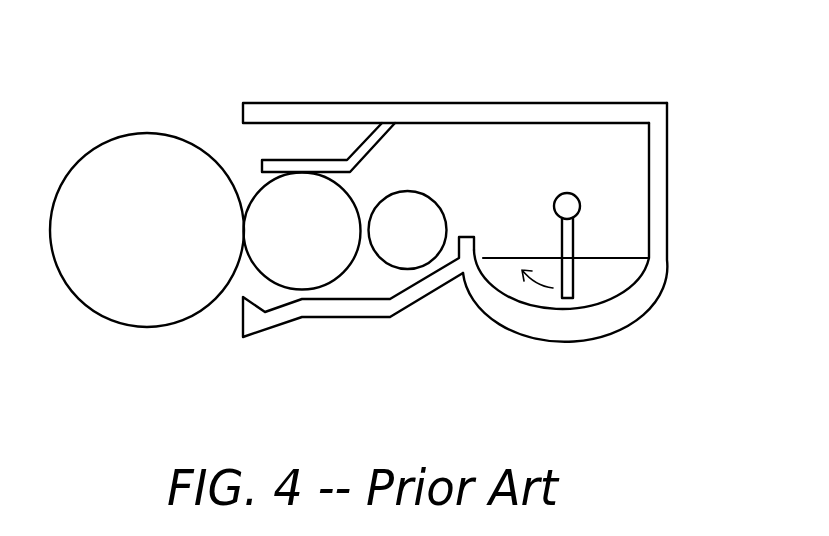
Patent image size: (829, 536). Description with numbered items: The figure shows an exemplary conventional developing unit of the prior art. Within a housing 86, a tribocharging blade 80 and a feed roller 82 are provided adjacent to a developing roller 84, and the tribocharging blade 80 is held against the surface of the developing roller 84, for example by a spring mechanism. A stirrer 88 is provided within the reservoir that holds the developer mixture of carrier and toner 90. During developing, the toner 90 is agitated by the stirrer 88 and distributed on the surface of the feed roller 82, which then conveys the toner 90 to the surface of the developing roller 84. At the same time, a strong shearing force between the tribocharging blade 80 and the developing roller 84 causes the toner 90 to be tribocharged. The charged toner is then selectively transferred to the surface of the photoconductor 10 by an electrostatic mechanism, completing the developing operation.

The photoconductor 10 is at (133, 243).
The tribocharging blade 80 is at (362, 148).
The feed roller 82 is at (427, 255).
The developing roller 84 is at (316, 265).
The housing 86 is at (280, 113).
The stirrer 88 is at (568, 238).
The toner 90 is at (612, 287).